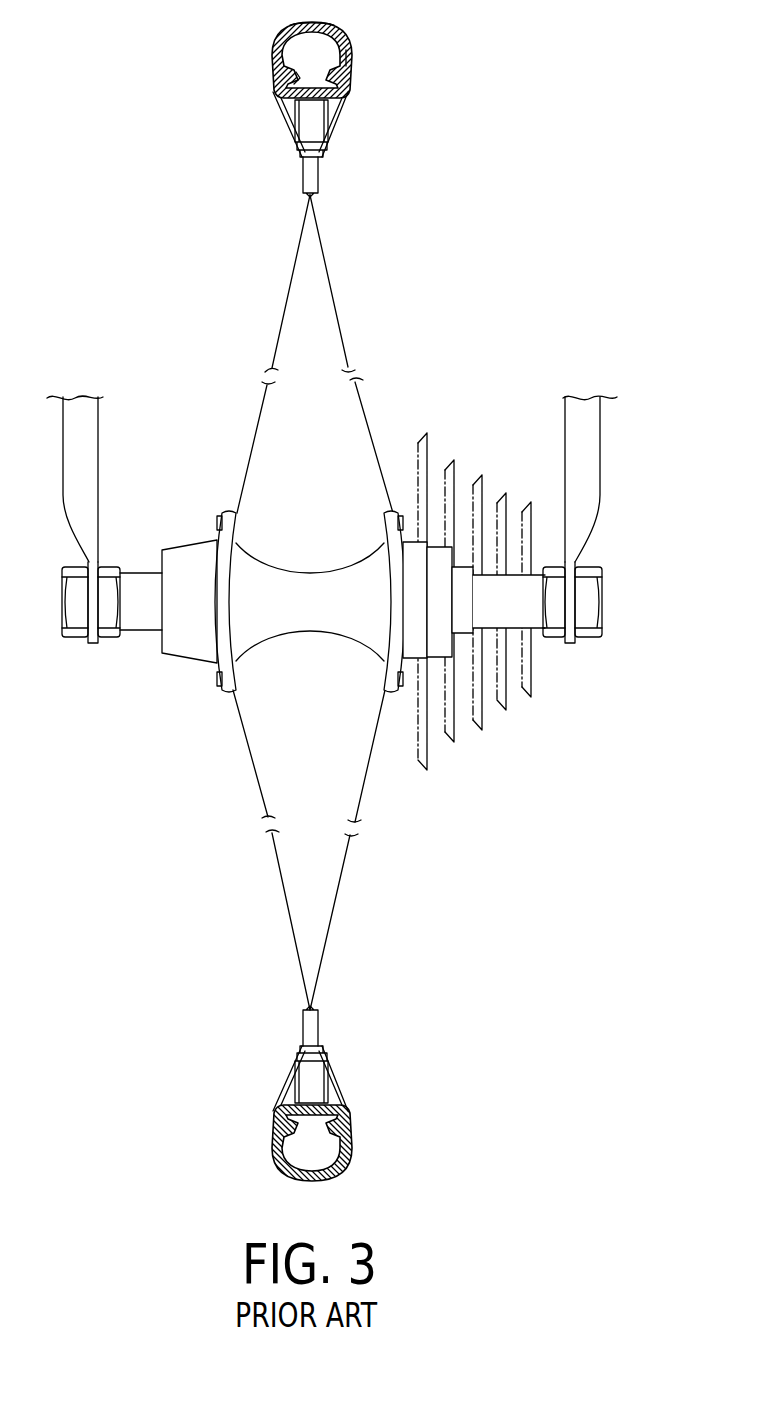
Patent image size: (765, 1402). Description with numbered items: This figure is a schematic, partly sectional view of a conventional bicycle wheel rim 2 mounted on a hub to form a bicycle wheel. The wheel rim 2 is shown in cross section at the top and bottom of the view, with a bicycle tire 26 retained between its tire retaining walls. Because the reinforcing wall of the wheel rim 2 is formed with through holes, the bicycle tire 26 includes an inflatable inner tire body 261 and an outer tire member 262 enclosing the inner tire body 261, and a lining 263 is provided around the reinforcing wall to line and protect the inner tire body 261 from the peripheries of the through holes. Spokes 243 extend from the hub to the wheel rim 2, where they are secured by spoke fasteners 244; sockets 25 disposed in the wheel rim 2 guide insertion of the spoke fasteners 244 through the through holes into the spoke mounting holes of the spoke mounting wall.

The bicycle wheel rim 2 is at (282, 117).
The socket 25 is at (347, 108).
The bicycle tire 26 is at (345, 32).
The inflatable inner tire body 261 is at (347, 55).
The outer tire member 262 is at (317, 22).
The lining 263 is at (310, 90).
The spoke 243 is at (285, 303).
The spoke fastener 244 is at (317, 173).